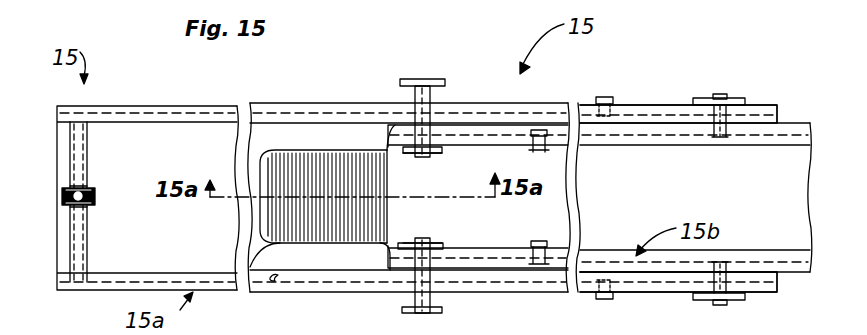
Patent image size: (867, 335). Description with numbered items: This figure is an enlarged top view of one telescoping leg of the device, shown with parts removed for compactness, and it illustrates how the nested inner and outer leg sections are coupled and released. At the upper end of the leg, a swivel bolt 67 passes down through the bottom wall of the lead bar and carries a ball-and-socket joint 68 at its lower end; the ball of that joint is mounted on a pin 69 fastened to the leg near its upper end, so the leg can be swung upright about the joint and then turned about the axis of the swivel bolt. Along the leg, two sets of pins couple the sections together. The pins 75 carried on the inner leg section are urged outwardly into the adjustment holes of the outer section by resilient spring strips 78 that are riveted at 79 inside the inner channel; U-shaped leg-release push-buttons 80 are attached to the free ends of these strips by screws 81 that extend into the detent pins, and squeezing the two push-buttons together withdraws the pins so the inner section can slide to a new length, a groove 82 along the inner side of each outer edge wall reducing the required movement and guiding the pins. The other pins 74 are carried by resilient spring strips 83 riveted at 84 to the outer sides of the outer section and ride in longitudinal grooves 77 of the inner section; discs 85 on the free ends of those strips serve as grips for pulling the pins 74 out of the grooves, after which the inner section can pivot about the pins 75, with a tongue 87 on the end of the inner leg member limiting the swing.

The swivel bolt 67 is at (84, 188).
The ball-and-socket joint 68 is at (94, 197).
The pin 69 is at (87, 244).
The pin 74 is at (715, 141).
The pin 75 is at (432, 135).
The longitudinal groove 77 is at (664, 136).
The resilient spring strip 78 is at (448, 142).
The rivet 79 is at (545, 150).
The leg-release push-button 80 is at (440, 80).
The screw 81 is at (423, 154).
The groove 82 is at (304, 104).
The resilient spring strip 83 is at (650, 105).
The rivet 84 is at (605, 98).
The disc 85 is at (733, 97).
The tongue 87 is at (282, 238).